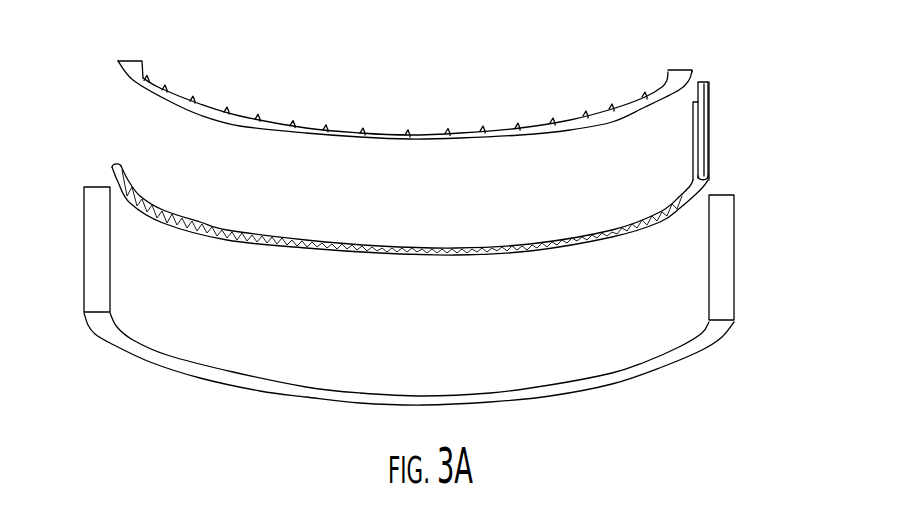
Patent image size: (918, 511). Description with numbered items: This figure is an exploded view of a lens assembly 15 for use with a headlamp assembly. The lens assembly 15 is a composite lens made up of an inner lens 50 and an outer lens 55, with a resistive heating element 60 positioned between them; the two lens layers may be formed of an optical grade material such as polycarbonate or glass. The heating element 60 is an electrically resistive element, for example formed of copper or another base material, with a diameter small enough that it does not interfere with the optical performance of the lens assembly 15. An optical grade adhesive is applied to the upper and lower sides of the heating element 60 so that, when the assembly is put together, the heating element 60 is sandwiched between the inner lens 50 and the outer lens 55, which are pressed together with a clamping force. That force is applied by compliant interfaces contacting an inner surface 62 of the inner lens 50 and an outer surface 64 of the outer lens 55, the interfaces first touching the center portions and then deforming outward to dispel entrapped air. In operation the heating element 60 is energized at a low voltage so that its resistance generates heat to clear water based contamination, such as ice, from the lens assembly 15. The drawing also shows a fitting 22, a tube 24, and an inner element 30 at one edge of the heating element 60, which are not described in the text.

The lens assembly 15 is at (73, 153).
The conduit fitting 22 is at (693, 122).
The tube 24 is at (708, 110).
The inner conductor 30 is at (703, 148).
The inner lens 50 is at (692, 70).
The outer lens 55 is at (735, 307).
The resistive heating element 60 is at (166, 207).
The inner surface 62 is at (205, 100).
The outer surface 64 is at (213, 384).